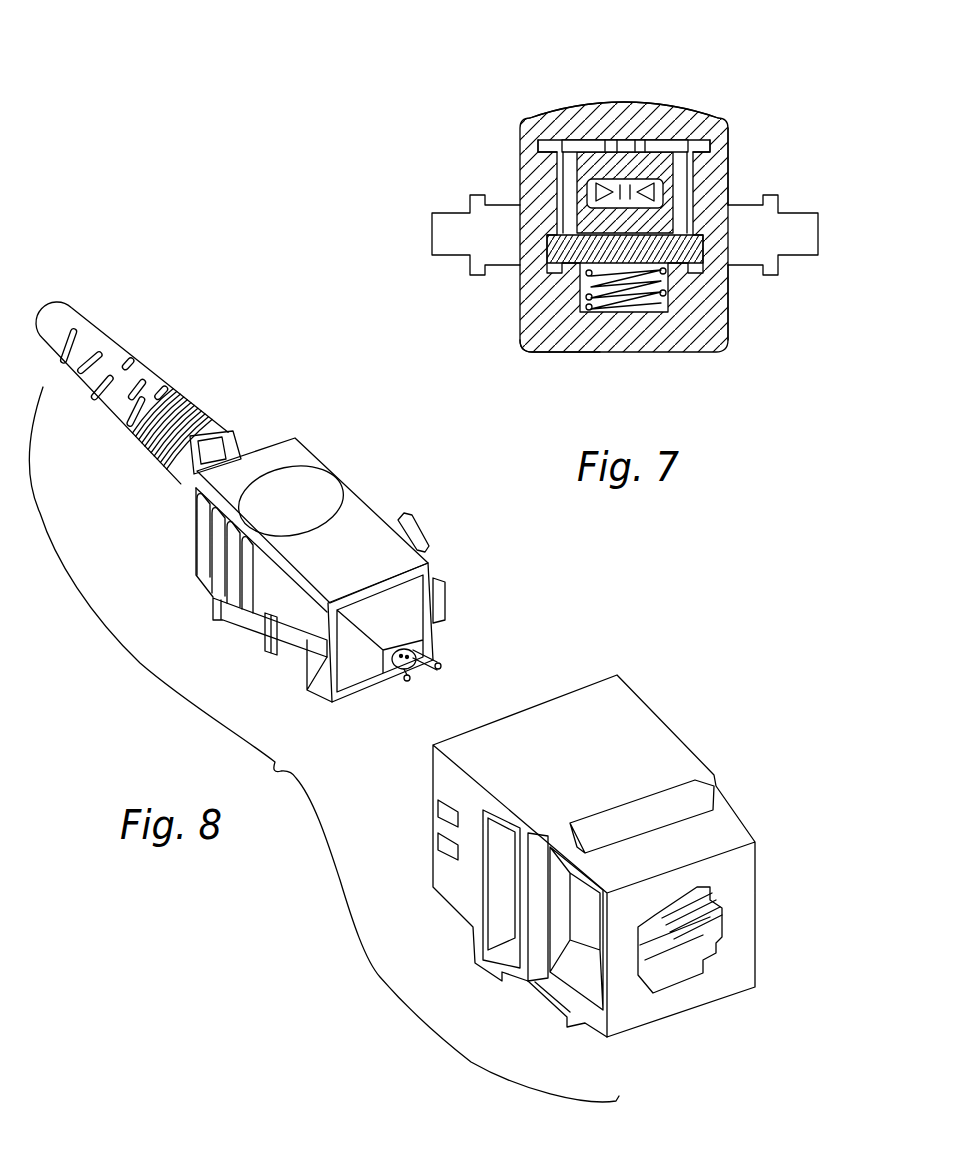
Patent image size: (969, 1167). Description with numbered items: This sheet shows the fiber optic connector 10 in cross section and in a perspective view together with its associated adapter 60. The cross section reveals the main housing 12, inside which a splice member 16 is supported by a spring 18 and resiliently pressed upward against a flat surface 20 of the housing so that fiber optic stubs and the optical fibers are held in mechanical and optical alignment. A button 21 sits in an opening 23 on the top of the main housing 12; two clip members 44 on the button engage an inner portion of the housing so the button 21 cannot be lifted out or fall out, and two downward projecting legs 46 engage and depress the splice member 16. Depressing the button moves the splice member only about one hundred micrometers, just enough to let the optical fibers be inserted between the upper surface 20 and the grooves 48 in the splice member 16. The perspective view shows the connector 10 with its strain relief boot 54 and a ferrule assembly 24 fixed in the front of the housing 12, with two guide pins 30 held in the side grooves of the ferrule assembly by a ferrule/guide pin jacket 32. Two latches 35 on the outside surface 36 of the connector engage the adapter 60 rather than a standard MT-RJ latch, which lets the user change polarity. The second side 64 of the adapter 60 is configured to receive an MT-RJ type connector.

In FIG. 7, the fiber optic connector 10 is at (532, 88).
In FIG. 8, the fiber optic connector 10 is at (276, 414).
In FIG. 7, the main housing 12 is at (728, 318).
In FIG. 8, the main housing 12 is at (360, 492).
In FIG. 7, the splice member 16 is at (557, 250).
In FIG. 7, the spring 18 is at (630, 300).
In FIG. 7, the flat surface 20 is at (585, 292).
In FIG. 7, the button 21 is at (652, 108).
In FIG. 8, the button 21 is at (320, 488).
In FIG. 7, the opening 23 is at (708, 145).
In FIG. 8, the ferrule assembly 24 is at (410, 668).
In FIG. 8, the guide pins 30 is at (407, 673).
In FIG. 8, the ferrule/guide pin jacket 32 is at (427, 641).
In FIG. 7, the latches 35 is at (432, 235).
In FIG. 8, the latches 35 is at (243, 623).
In FIG. 7, the outside surface 36 is at (728, 176).
In FIG. 8, the outside surface 36 is at (313, 692).
In FIG. 7, the clip members 44 is at (597, 193).
In FIG. 7, the downward projecting legs 46 is at (540, 148).
In FIG. 7, the grooves 48 is at (640, 247).
In FIG. 8, the strain relief boot 54 is at (134, 440).
In FIG. 8, the adapter 60 is at (470, 934).
In FIG. 8, the second side 64 is at (669, 1027).